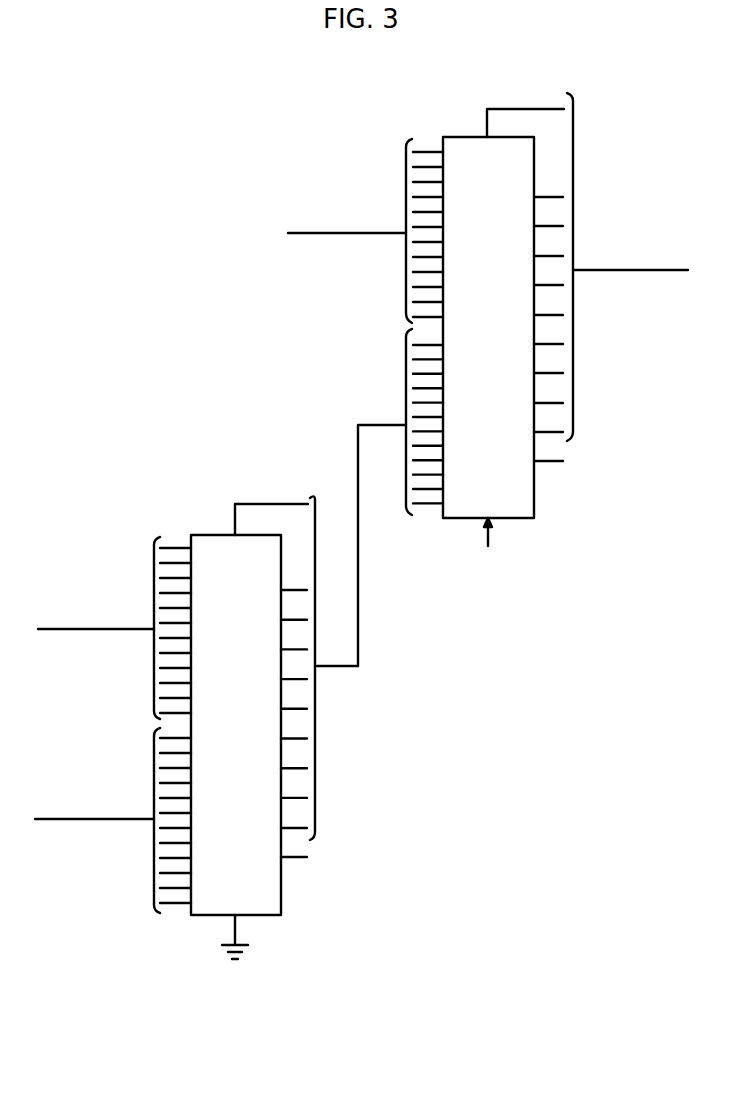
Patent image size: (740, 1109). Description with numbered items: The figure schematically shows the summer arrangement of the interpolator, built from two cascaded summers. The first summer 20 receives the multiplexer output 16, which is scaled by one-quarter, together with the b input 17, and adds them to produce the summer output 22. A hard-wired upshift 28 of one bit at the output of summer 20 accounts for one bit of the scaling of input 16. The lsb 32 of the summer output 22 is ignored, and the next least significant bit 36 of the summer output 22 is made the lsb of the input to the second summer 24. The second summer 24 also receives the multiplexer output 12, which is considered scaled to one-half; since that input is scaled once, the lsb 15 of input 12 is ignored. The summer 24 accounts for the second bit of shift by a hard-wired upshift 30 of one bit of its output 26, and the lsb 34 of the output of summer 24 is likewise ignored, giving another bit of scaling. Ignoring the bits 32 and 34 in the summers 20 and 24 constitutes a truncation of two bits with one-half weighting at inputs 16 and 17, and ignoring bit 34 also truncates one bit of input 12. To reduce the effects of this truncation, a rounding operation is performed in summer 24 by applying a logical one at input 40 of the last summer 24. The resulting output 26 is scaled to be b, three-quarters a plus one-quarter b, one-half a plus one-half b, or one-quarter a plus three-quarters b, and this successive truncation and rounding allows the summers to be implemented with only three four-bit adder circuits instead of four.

The multiplexer output 12 is at (313, 232).
The lsb of input 12 15 is at (412, 330).
The multiplexer output 16 is at (70, 628).
The b input 17 is at (65, 818).
The summer 20 is at (283, 918).
The summer output 22 is at (361, 618).
The summer 24 is at (536, 518).
The summer output 26 is at (675, 269).
The hardwired upshift 28 is at (235, 512).
The hardwired upshift 30 is at (487, 114).
The lsb of summer output 22 32 is at (297, 860).
The lsb of output of summer 24 34 is at (558, 466).
The next least significant bit 36 is at (425, 511).
The input of summer 24 40 is at (486, 547).